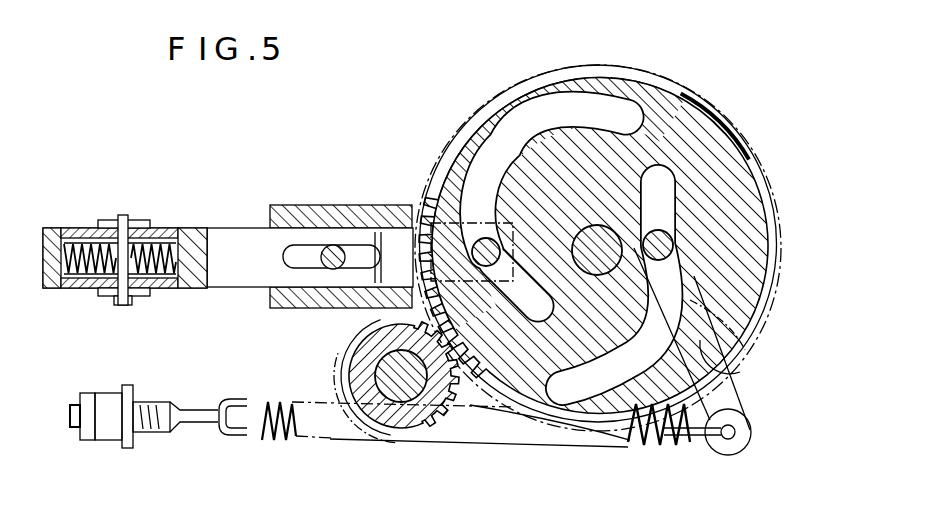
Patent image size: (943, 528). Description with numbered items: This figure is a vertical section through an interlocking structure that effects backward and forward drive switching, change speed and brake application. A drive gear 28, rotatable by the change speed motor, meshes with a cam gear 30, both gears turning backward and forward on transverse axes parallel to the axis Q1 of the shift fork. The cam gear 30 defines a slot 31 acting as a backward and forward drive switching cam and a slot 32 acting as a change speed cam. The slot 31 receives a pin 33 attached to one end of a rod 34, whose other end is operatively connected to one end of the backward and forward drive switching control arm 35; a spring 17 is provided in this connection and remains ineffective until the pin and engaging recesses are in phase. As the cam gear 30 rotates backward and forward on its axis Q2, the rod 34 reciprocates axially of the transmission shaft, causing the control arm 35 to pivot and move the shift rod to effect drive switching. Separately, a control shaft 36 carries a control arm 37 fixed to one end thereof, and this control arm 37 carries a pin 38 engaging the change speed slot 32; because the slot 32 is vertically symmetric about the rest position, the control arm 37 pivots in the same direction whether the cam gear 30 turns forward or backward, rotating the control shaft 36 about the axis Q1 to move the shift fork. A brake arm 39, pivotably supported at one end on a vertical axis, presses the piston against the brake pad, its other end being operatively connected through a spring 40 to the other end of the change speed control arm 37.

The spring 17 is at (68, 290).
The drive gear 28 is at (437, 418).
The cam gear 30 is at (690, 115).
The slot 31 is at (525, 117).
The slot 32 is at (668, 194).
The pin 33 is at (453, 157).
The rod 34 is at (238, 226).
The control arm 35 is at (104, 220).
The control shaft 36 is at (765, 320).
The control arm 37 is at (752, 430).
The pin 38 is at (676, 237).
The brake arm 39 is at (130, 440).
The spring 40 is at (652, 448).
The axis Q1 is at (735, 372).
The axis Q2 is at (593, 226).